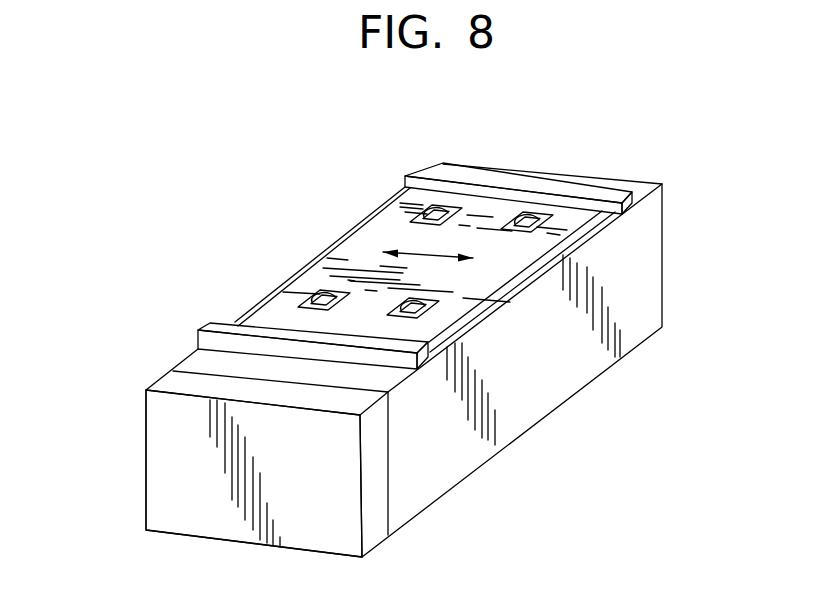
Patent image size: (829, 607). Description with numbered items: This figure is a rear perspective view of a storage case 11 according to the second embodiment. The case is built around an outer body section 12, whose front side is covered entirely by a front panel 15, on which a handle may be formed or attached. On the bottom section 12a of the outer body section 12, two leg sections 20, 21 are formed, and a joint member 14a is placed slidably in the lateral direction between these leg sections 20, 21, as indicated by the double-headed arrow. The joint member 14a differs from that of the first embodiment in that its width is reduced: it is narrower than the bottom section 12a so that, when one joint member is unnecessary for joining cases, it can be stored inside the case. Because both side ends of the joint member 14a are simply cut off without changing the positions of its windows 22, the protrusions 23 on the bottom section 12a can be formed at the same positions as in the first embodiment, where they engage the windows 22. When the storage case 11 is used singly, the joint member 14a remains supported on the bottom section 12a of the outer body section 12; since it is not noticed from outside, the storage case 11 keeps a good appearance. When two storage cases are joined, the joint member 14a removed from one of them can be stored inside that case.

The storage case 11 is at (692, 193).
The outer body section 12 is at (547, 380).
The bottom section 12a is at (605, 226).
The joint member 14a is at (355, 252).
The front panel 15 is at (165, 487).
The leg section 20 is at (210, 323).
The leg section 21 is at (425, 178).
The windows 22 is at (533, 212).
The protrusions 23 is at (283, 292).